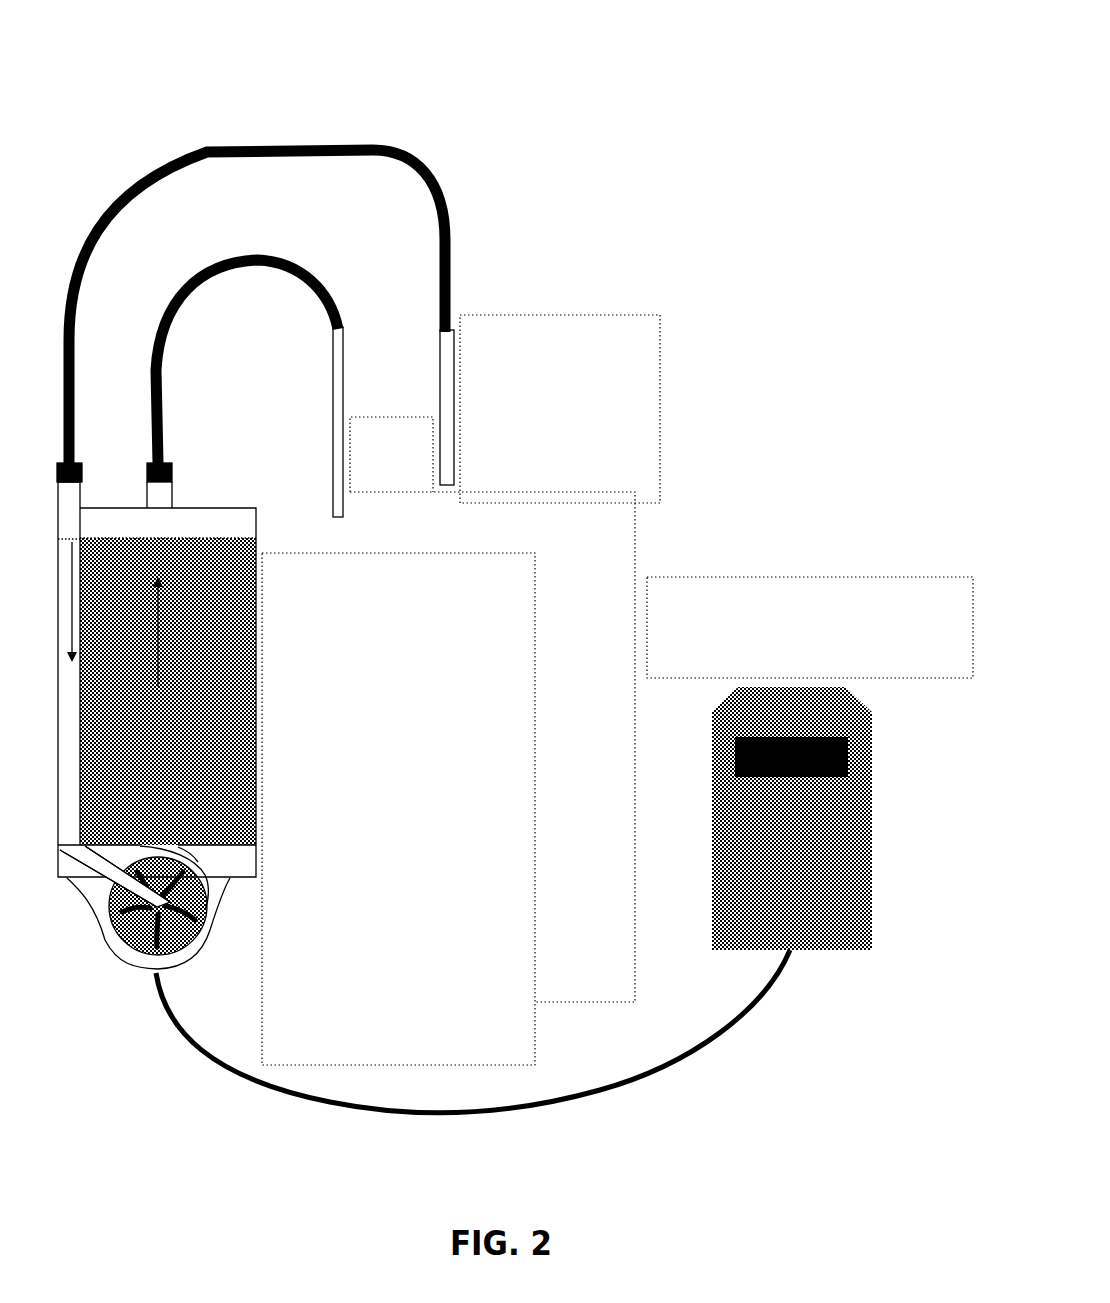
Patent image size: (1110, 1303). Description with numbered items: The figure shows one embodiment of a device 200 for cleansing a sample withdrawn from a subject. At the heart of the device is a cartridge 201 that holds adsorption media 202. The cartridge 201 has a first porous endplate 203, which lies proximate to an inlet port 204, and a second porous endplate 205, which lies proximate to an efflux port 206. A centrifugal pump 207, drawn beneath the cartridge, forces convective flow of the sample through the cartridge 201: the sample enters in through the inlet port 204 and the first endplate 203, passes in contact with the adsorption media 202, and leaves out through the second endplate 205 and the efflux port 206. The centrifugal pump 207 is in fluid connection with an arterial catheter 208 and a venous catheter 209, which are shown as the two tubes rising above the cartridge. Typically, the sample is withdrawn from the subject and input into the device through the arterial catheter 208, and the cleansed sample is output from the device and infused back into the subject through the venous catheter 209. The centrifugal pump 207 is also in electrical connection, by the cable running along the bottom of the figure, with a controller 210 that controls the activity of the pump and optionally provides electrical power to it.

The device 200 is at (628, 173).
The cartridge 201 is at (257, 670).
The adsorption media 202 is at (217, 760).
The first porous endplate 203 is at (257, 840).
The inlet port 204 is at (178, 852).
The second porous endplate 205 is at (243, 542).
The efflux port 206 is at (160, 500).
The centrifugal pump 207 is at (177, 922).
The arterial catheter 208 is at (455, 425).
The venous catheter 209 is at (343, 452).
The controller 210 is at (872, 800).